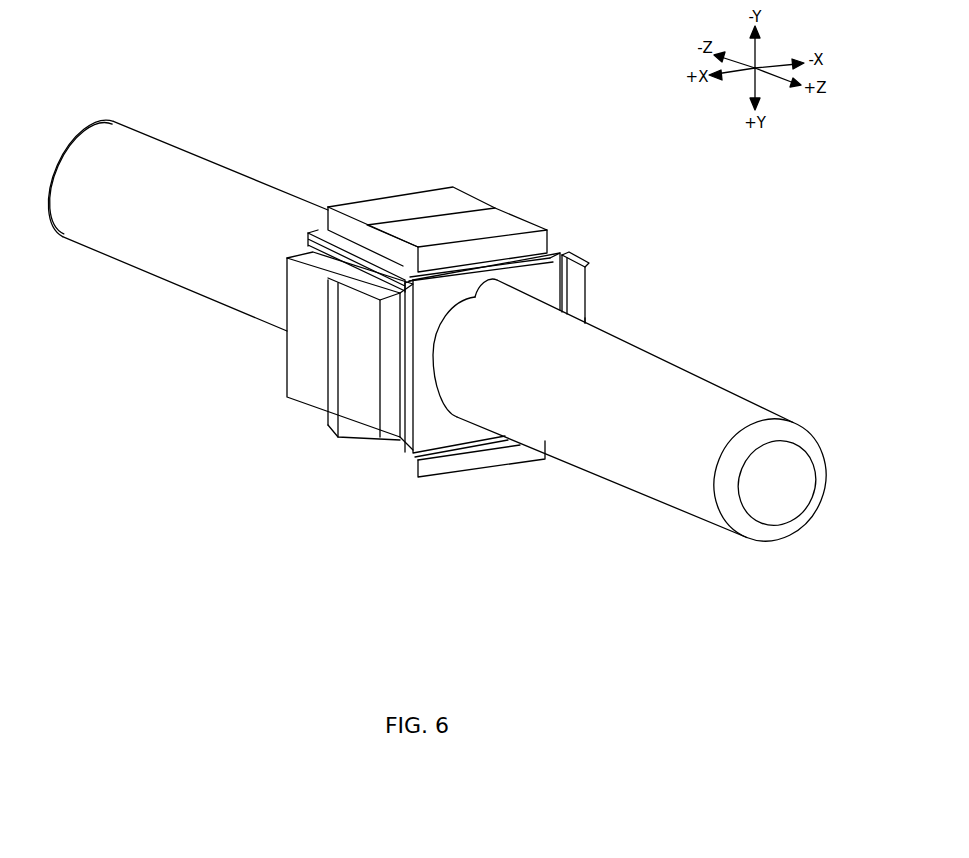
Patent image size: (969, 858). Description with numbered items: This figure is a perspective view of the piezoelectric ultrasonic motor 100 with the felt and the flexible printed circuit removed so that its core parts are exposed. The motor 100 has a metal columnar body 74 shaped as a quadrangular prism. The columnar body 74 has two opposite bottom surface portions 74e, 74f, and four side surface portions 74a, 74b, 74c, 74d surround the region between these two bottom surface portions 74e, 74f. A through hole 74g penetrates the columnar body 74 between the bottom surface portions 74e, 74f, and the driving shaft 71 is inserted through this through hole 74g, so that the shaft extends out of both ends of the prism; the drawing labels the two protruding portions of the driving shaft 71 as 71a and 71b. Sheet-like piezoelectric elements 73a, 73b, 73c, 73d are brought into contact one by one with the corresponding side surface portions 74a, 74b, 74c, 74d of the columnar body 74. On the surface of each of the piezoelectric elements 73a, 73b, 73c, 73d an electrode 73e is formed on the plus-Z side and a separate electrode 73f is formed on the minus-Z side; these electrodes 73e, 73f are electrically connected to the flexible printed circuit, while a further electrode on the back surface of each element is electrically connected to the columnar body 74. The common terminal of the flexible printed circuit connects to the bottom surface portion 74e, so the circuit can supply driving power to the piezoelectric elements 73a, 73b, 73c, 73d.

The piezoelectric ultrasonic motor 100 is at (377, 106).
The driving shaft 71 is at (683, 490).
The tube first end portion 71a is at (683, 403).
The tube second end portion 71b is at (95, 125).
The piezoelectric element 73a is at (467, 208).
The piezoelectric element 73b is at (575, 292).
The piezoelectric element 73c is at (485, 457).
The piezoelectric element 73d is at (393, 417).
The electrode 73e is at (497, 220).
The electrode 73f is at (432, 200).
The columnar body 74 is at (352, 242).
The side surface portion 74a is at (560, 253).
The side surface portion 74b is at (567, 262).
The side surface portion 74c is at (418, 460).
The side surface portion 74d is at (401, 440).
The bottom surface portion 74e is at (555, 253).
The bottom surface portion 74f is at (317, 230).
The through hole 74g is at (590, 323).